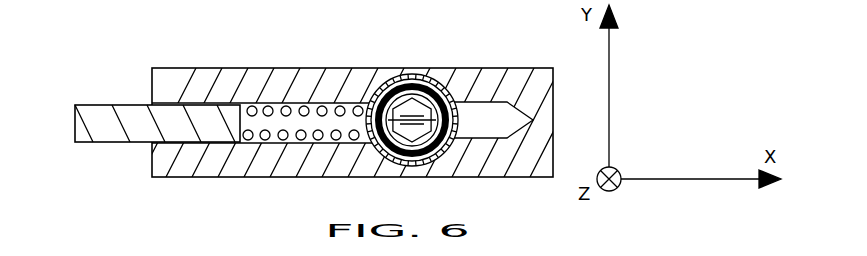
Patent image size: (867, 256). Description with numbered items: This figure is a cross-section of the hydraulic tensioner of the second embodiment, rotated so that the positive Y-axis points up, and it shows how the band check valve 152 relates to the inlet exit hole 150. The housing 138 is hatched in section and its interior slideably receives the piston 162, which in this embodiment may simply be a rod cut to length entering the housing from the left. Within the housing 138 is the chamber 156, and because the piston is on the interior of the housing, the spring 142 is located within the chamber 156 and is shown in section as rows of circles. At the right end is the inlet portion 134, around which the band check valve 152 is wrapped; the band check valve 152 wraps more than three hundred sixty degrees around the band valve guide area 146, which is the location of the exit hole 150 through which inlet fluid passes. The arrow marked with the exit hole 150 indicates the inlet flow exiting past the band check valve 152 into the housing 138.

The inlet portion 134 is at (460, 128).
The housing 138 is at (232, 177).
The spring 142 is at (254, 105).
The band valve guide area 146 is at (436, 95).
The inlet exit hole 150 is at (436, 120).
The band check valve 152 is at (461, 92).
The chamber 156 is at (328, 123).
The piston 162 is at (94, 105).